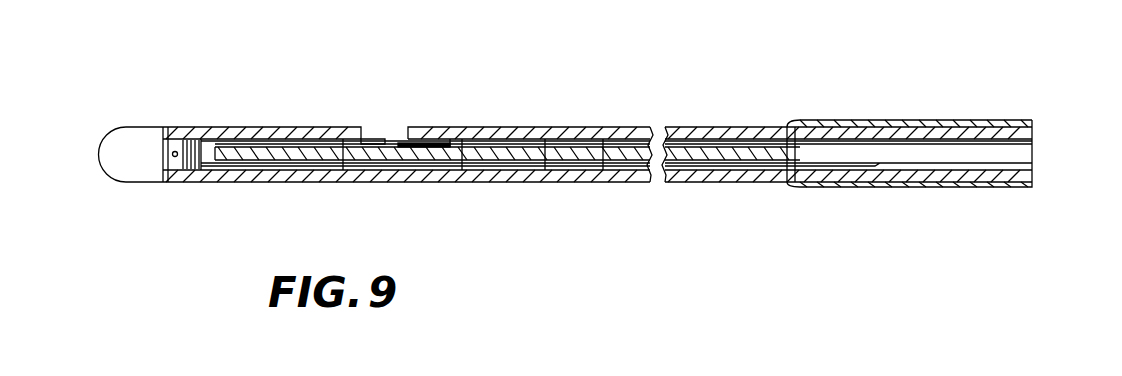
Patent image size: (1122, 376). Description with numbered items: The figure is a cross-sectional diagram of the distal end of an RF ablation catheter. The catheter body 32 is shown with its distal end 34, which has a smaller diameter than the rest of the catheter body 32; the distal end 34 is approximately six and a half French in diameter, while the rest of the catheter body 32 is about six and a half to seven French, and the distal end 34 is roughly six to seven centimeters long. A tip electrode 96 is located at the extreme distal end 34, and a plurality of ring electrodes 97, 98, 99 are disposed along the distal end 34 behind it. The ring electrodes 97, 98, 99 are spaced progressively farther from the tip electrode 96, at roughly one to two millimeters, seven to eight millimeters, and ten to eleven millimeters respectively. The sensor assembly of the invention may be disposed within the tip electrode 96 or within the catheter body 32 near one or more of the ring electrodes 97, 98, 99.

The distal end 34 is at (775, 72).
The tip electrode 96 is at (137, 168).
The ring electrode 97 is at (305, 135).
The ring electrode 98 is at (450, 127).
The ring electrode 99 is at (593, 128).
The catheter body 32 is at (912, 122).